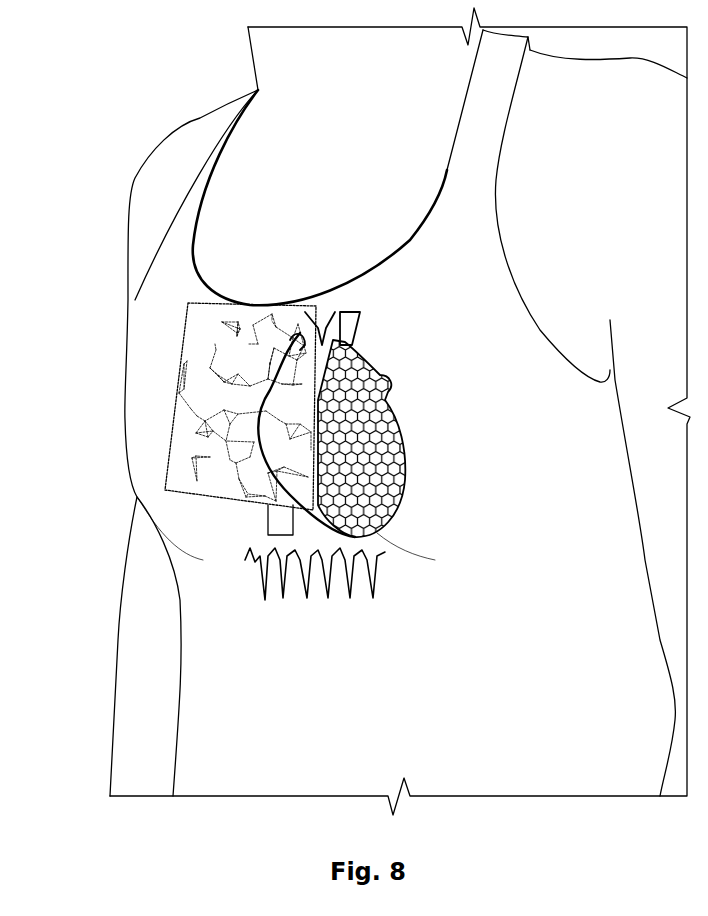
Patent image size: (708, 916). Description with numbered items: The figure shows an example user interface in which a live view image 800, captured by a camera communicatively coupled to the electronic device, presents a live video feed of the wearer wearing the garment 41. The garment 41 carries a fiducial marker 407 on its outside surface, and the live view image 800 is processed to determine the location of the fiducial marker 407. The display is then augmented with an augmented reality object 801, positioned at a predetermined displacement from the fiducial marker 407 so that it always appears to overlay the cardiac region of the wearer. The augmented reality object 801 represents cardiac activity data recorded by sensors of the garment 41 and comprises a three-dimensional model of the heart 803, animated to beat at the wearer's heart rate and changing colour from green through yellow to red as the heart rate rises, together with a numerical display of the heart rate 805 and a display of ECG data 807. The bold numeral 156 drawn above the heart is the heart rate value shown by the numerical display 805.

The garment 41 is at (103, 446).
The heart 156 is at (345, 285).
The fiducial marker 407 is at (225, 345).
The live view image 800 is at (90, 748).
The augmented reality object 801 is at (243, 505).
The 3D model of the heart 803 is at (302, 498).
The numerical display of the heart rate 805 is at (334, 348).
The display of ECG data 807 is at (350, 595).